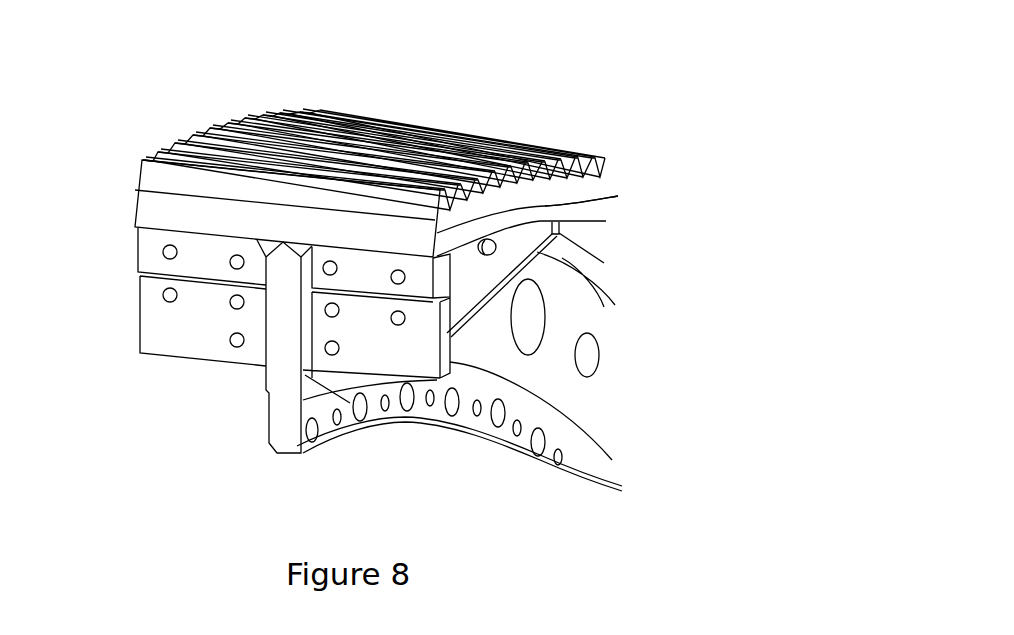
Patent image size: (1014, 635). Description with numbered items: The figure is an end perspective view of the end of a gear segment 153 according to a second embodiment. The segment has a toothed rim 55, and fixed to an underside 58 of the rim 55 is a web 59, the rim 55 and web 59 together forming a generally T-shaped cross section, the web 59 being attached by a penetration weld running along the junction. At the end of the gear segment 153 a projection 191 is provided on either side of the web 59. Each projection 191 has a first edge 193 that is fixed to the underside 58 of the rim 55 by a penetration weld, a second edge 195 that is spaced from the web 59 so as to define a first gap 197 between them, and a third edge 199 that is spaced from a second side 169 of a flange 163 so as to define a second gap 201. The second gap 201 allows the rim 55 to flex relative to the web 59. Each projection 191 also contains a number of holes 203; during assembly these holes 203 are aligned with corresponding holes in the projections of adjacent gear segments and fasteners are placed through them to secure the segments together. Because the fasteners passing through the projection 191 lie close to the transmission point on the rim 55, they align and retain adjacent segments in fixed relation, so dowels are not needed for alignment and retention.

The gear segment 153 is at (325, 147).
The rim 55 is at (178, 214).
The second edge 195 is at (256, 255).
The underside 58 is at (150, 240).
The flange 163 is at (160, 327).
The third edge 199 is at (183, 272).
The projection 191 is at (213, 248).
The first edge 193 is at (233, 243).
The first gap 197 is at (545, 207).
The second side 169 is at (212, 278).
The second gap 201 is at (460, 293).
The web 59 is at (256, 340).
The holes 203 is at (422, 390).